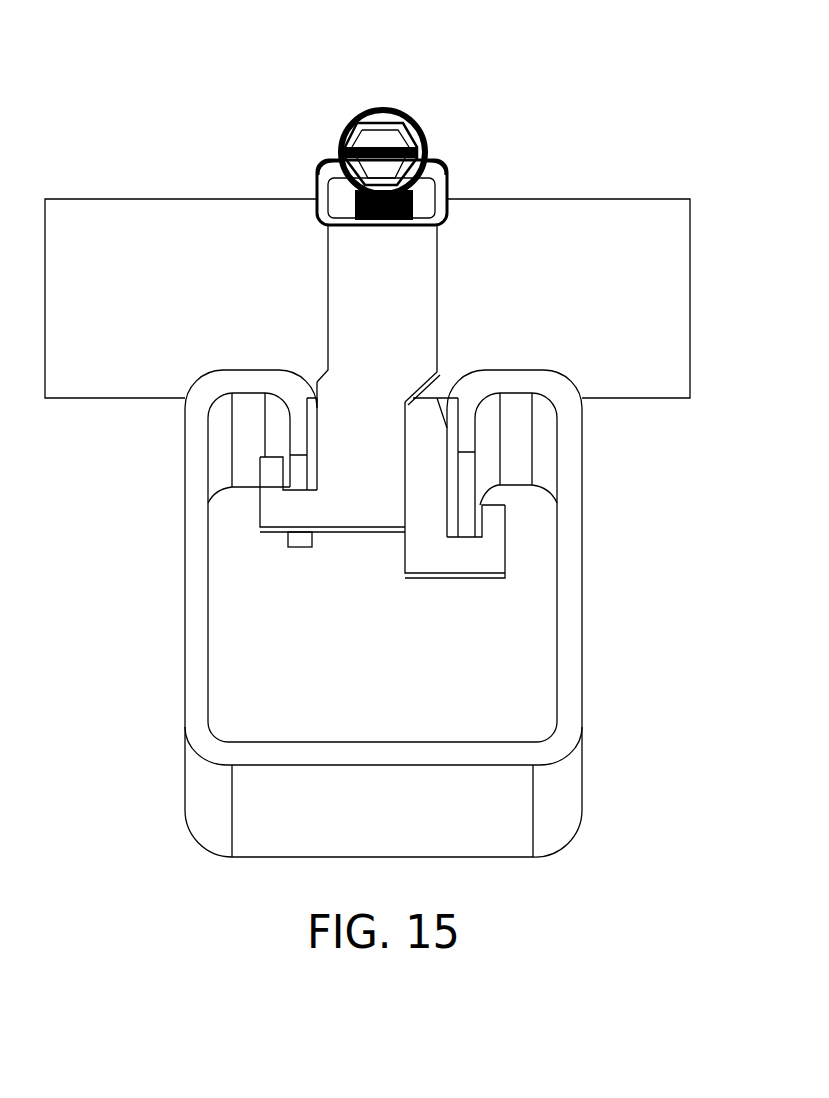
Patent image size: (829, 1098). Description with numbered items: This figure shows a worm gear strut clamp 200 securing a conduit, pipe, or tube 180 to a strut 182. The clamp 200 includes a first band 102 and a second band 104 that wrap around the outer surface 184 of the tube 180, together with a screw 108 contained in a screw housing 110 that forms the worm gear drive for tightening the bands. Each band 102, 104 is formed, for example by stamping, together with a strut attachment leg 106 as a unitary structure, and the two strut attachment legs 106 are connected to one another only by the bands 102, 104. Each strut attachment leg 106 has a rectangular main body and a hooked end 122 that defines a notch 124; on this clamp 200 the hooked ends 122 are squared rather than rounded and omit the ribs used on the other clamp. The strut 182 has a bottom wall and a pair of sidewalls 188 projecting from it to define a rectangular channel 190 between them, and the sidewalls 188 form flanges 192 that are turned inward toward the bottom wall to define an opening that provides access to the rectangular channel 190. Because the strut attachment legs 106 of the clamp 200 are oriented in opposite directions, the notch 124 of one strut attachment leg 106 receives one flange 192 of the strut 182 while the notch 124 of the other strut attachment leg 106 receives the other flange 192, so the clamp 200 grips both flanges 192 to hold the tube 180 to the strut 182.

The clamp 200 is at (336, 82).
The tube 180 is at (676, 182).
The screw 108 is at (377, 137).
The screw housing 110 is at (437, 157).
The first band 102 is at (422, 202).
The second band 104 is at (342, 247).
The strut attachment leg 106 is at (352, 410).
The outer surface 184 is at (158, 312).
The flange 192 is at (300, 438).
The notch 124 is at (266, 464).
The hooked end 122 is at (312, 510).
The strut 182 is at (394, 613).
The sidewall 188 is at (198, 652).
The rectangular channel 190 is at (381, 750).